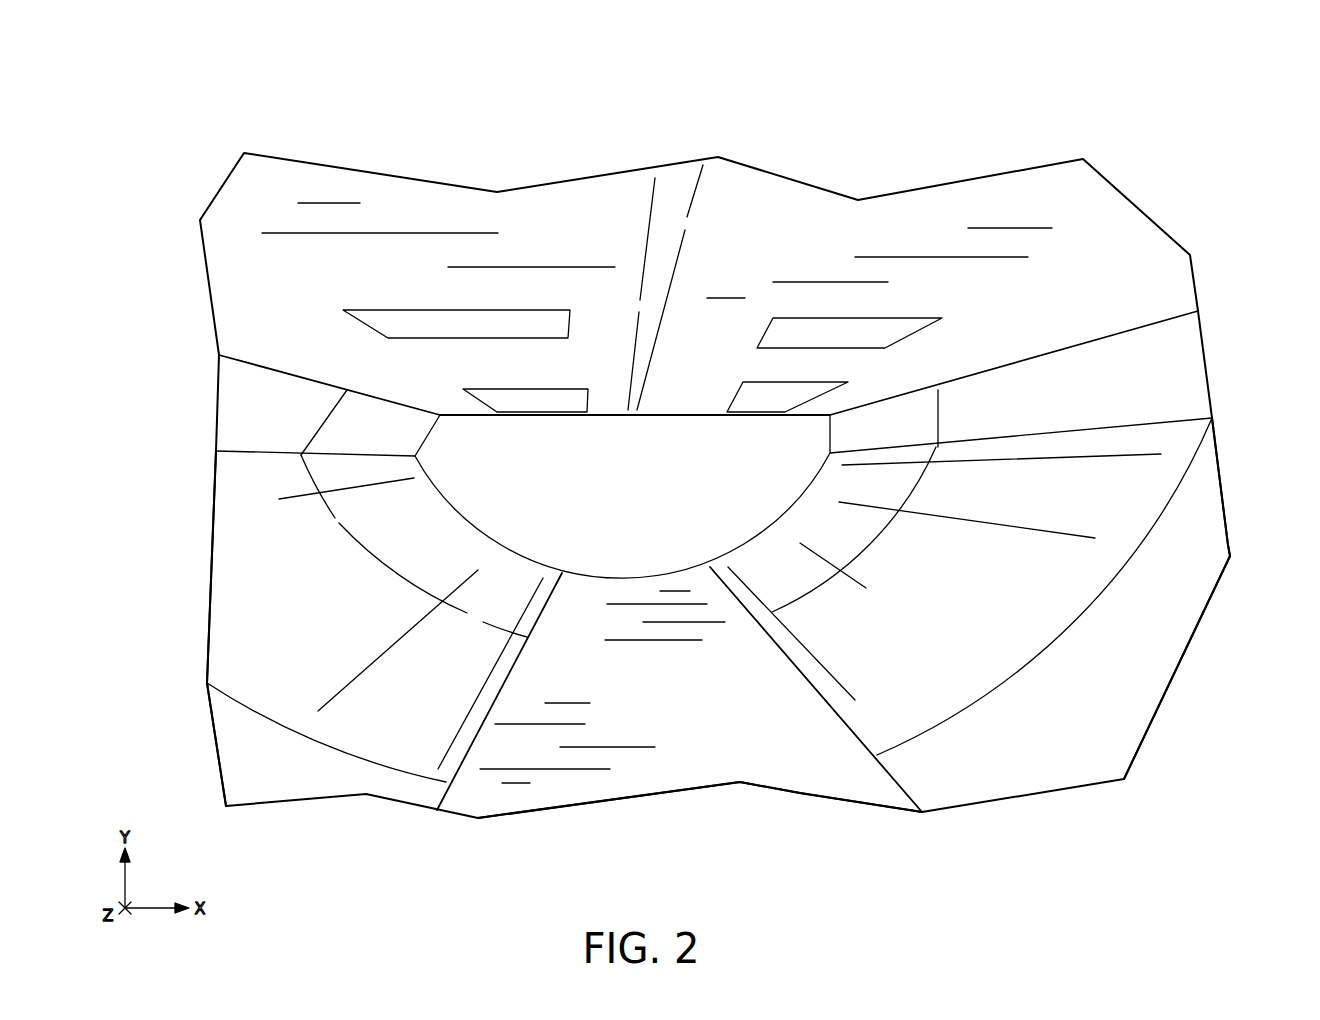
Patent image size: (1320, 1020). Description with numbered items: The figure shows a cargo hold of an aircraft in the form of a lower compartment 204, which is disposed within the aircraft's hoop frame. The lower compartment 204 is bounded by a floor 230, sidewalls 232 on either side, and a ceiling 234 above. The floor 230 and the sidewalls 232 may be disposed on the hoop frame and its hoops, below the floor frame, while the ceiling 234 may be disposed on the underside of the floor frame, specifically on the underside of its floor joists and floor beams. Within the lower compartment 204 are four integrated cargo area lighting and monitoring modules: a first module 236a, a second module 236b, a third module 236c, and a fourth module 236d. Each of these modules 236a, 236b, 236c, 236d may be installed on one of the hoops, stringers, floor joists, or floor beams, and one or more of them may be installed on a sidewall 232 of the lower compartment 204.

The lower compartment 204 is at (208, 132).
The floor 230 is at (757, 762).
The sidewalls 232 is at (235, 588).
The ceiling 234 is at (608, 192).
The first integrated cargo area lighting and monitoring module 236a is at (413, 330).
The second integrated cargo area lighting and monitoring module 236b is at (530, 400).
The third integrated cargo area lighting and monitoring module 236c is at (848, 338).
The fourth integrated cargo area lighting and monitoring module 236d is at (787, 390).